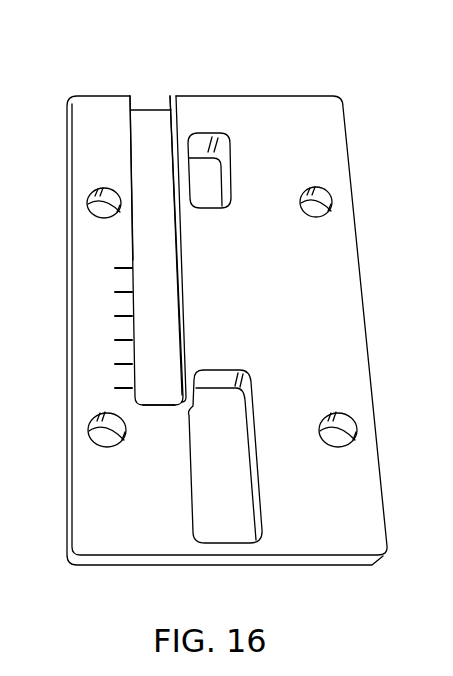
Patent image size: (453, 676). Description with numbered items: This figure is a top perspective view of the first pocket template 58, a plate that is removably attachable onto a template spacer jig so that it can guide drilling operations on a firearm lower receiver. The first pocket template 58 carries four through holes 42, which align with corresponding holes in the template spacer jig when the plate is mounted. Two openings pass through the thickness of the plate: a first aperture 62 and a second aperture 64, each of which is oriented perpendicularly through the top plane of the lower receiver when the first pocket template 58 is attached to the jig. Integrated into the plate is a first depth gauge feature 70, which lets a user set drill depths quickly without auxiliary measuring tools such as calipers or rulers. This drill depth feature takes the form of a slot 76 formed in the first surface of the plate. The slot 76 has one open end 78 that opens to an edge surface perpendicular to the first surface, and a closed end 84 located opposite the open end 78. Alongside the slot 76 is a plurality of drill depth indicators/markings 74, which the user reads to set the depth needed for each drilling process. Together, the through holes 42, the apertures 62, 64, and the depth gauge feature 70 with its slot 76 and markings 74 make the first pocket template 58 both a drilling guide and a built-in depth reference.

The through holes 42 is at (340, 430).
The first pocket template 58 is at (287, 112).
The first aperture 62 is at (232, 503).
The second aperture 64 is at (200, 167).
The first depth gauge feature 70 is at (145, 135).
The drill depth indicators/markings 74 is at (113, 362).
The slot 76 is at (167, 318).
The open end 78 is at (143, 98).
The closed end 84 is at (167, 403).